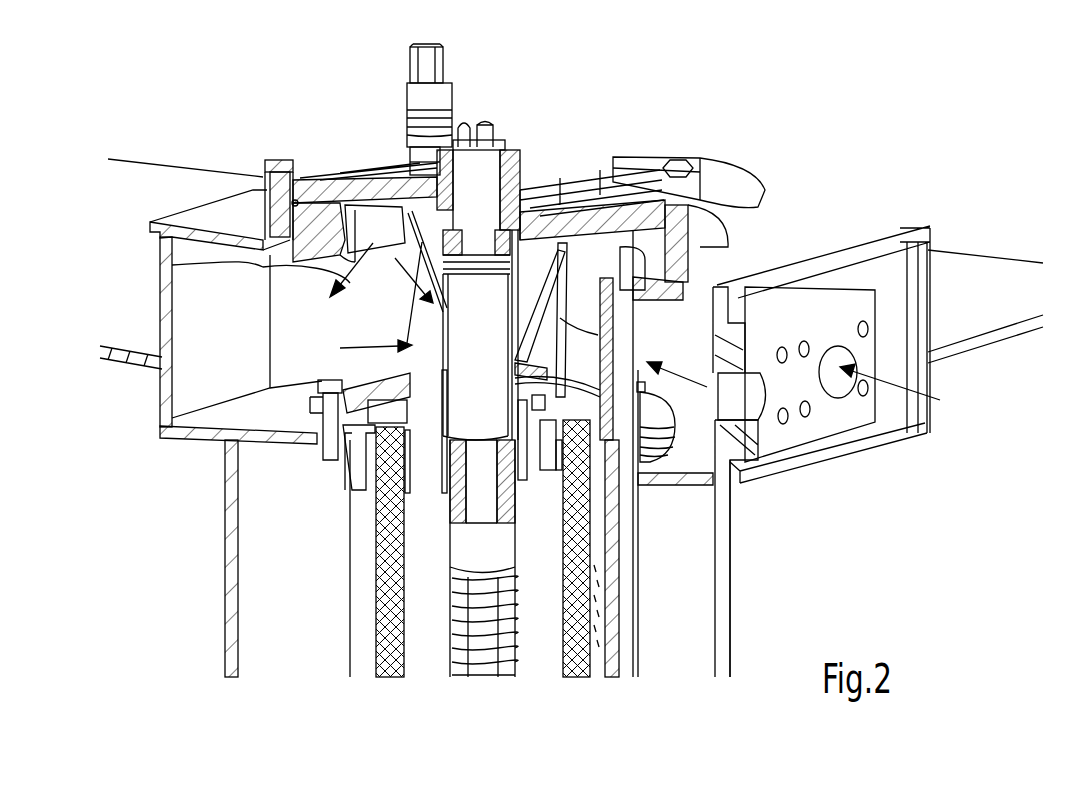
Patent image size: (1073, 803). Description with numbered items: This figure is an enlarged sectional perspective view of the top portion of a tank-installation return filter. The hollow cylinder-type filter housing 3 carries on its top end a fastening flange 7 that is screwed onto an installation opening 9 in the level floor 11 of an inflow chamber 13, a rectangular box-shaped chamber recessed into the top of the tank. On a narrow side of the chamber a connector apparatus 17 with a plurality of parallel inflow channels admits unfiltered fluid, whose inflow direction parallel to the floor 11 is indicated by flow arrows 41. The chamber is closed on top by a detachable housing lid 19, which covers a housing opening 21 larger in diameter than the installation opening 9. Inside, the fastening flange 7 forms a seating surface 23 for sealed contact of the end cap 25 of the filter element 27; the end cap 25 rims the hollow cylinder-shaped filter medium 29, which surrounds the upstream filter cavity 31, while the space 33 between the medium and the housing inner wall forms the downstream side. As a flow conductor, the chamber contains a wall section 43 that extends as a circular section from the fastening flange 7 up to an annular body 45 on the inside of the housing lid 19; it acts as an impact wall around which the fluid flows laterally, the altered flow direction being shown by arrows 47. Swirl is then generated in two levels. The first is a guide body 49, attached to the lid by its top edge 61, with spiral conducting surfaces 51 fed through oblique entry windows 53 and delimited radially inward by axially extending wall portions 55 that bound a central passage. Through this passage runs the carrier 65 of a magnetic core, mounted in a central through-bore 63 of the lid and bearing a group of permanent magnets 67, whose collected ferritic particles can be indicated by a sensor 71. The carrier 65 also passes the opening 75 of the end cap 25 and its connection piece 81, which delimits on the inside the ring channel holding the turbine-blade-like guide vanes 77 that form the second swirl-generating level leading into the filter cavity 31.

The filter housing 3 is at (700, 530).
The fastening flange 7 is at (360, 457).
The installation opening 9 is at (337, 455).
The floor 11 is at (240, 410).
The inflow chamber 13 is at (308, 319).
The connector apparatus 17 is at (758, 377).
The housing lid 19 is at (318, 185).
The housing opening 21 is at (175, 265).
The seating surface 23 is at (645, 470).
The end cap 25 is at (362, 400).
The filter element 27 is at (375, 692).
The filter medium 29 is at (387, 605).
The filter cavity 31 is at (370, 515).
The space 33 is at (602, 665).
The flow arrows 41 is at (700, 380).
The wall section 43 is at (720, 283).
The annular body 45 is at (592, 240).
The arrows 47 is at (410, 262).
The guide body 49 is at (562, 360).
The conducting surfaces 51 is at (545, 310).
The entry windows 53 is at (560, 318).
The wall portions 55 is at (522, 280).
The edge 61 is at (420, 190).
The central through-bore 63 is at (522, 150).
The carrier 65 is at (450, 503).
The permanent magnets 67 is at (491, 695).
The sensor 71 is at (365, 470).
The opening 75 is at (442, 440).
The guide vanes 77 is at (545, 440).
The connection piece 81 is at (410, 450).